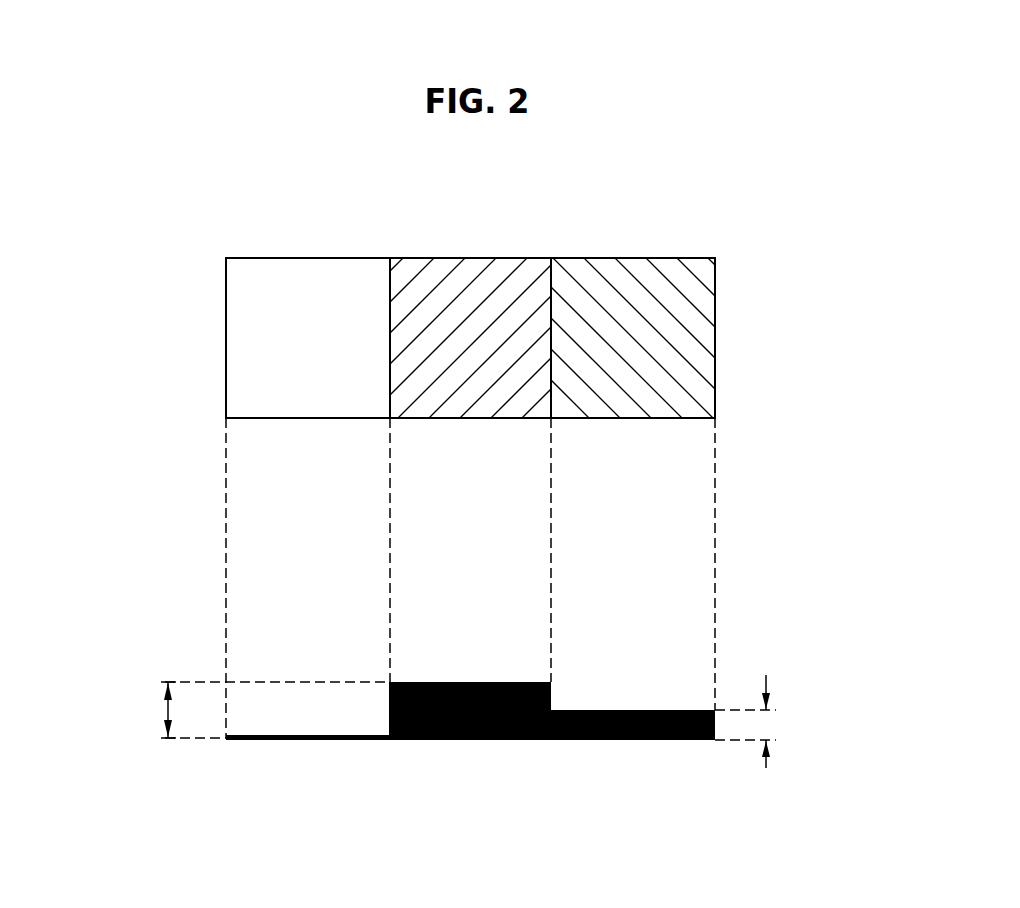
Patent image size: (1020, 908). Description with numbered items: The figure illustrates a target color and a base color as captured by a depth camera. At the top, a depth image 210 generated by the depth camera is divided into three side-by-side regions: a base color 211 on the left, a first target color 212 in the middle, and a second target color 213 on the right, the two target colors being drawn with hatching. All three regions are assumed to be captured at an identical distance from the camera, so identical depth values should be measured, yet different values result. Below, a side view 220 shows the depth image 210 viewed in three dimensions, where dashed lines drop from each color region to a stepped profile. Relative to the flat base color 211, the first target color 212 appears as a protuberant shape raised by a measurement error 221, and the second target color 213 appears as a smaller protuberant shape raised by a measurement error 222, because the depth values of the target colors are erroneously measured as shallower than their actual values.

The depth image 210 is at (182, 337).
The base color 211 is at (309, 293).
The first target color 212 is at (472, 293).
The second target color 213 is at (636, 293).
The side view 220 is at (182, 882).
The measurement error 221 is at (166, 709).
The measurement error 222 is at (767, 723).